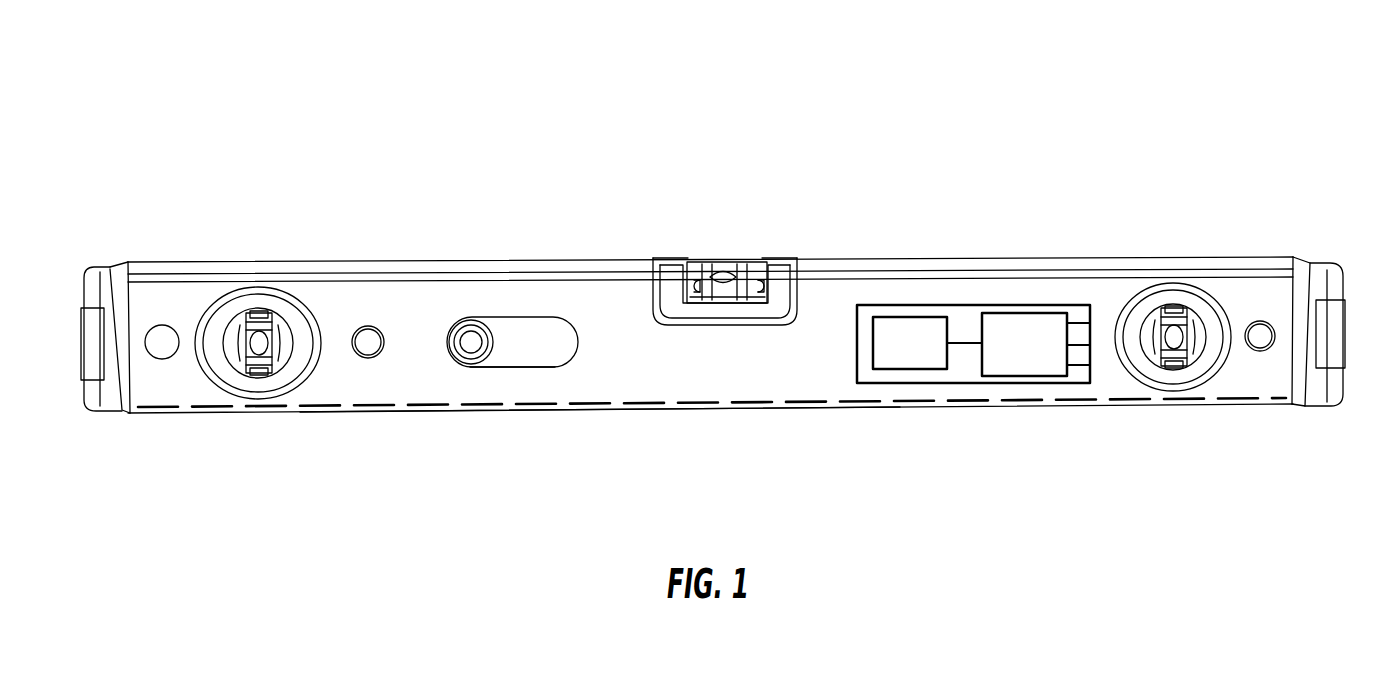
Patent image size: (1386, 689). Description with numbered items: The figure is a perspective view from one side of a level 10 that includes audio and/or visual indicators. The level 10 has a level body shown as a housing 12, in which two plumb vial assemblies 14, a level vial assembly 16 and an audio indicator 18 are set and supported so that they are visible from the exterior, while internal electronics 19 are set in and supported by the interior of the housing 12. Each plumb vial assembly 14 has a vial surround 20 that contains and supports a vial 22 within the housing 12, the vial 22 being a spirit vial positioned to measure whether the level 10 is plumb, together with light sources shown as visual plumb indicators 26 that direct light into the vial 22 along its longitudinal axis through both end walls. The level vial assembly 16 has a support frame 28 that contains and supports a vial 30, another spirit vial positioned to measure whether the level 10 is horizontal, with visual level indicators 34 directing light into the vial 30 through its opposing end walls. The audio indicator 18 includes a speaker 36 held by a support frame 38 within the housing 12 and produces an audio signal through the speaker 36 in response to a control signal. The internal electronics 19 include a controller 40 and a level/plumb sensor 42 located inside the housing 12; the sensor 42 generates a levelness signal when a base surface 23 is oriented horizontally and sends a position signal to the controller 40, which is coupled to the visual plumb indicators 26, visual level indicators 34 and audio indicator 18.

The level 10 is at (1146, 113).
The housing 12 is at (834, 390).
The plumb vial assembly 14 is at (262, 422).
The level vial assembly 16 is at (772, 298).
The audio indicator 18 is at (504, 374).
The internal electronics 19 is at (973, 275).
The vial surround 20 is at (289, 378).
The vial 22 is at (276, 316).
The base surface 23 is at (590, 413).
The visual plumb indicator 26 is at (268, 373).
The support frame 28 is at (668, 283).
The vial 30 is at (723, 291).
The visual level indicator 34 is at (757, 272).
The speaker 36 is at (466, 322).
The support frame 38 is at (543, 337).
The controller 40 is at (998, 298).
The level/plumb sensor 42 is at (910, 343).